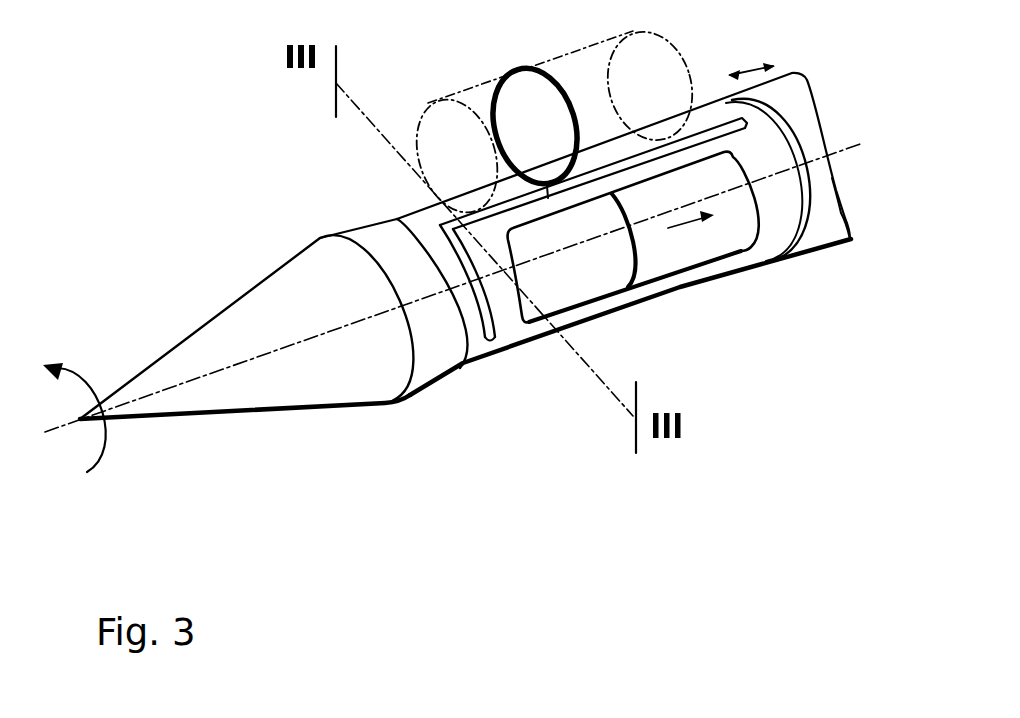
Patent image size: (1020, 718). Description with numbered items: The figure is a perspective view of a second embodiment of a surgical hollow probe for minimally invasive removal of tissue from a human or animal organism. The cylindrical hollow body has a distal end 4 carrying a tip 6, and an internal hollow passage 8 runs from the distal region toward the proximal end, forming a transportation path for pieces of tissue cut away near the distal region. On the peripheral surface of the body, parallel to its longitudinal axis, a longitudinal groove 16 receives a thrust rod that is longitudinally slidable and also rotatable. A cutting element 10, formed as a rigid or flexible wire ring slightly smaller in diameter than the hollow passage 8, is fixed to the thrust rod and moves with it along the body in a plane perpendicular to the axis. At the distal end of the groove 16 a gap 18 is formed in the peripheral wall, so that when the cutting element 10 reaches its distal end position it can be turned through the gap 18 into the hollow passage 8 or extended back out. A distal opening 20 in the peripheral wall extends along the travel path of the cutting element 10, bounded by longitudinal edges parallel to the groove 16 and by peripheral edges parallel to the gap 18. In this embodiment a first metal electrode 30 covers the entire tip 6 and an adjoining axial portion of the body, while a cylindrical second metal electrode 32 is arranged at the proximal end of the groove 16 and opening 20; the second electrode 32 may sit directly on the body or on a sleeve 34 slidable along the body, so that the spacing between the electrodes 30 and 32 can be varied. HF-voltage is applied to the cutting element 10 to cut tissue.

The distal end 4 is at (171, 337).
The tip 6 is at (211, 393).
The hollow passage 8 is at (850, 213).
The cutting element 10 is at (510, 72).
The longitudinal groove 16 is at (700, 126).
The gap 18 is at (488, 347).
The distal opening 20 is at (598, 287).
The first metal electrode 30 is at (378, 241).
The second metal electrode 32 is at (822, 214).
The sleeve 34 is at (810, 87).